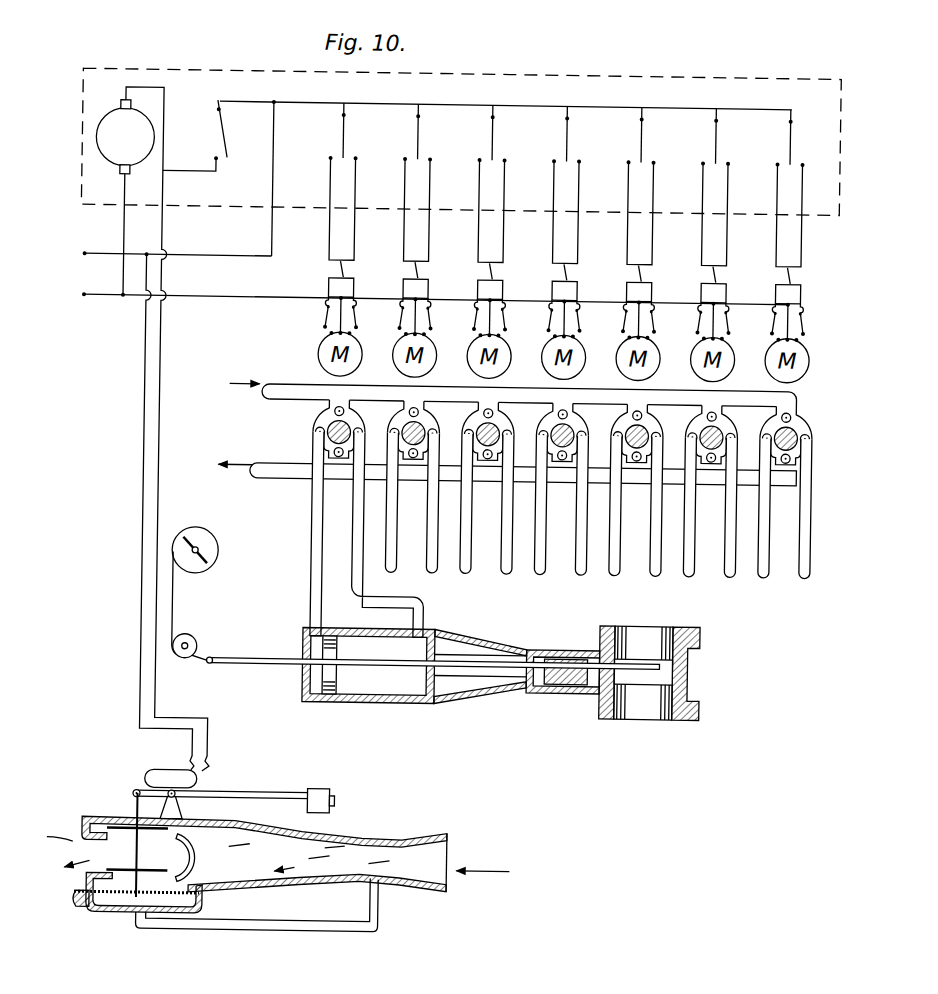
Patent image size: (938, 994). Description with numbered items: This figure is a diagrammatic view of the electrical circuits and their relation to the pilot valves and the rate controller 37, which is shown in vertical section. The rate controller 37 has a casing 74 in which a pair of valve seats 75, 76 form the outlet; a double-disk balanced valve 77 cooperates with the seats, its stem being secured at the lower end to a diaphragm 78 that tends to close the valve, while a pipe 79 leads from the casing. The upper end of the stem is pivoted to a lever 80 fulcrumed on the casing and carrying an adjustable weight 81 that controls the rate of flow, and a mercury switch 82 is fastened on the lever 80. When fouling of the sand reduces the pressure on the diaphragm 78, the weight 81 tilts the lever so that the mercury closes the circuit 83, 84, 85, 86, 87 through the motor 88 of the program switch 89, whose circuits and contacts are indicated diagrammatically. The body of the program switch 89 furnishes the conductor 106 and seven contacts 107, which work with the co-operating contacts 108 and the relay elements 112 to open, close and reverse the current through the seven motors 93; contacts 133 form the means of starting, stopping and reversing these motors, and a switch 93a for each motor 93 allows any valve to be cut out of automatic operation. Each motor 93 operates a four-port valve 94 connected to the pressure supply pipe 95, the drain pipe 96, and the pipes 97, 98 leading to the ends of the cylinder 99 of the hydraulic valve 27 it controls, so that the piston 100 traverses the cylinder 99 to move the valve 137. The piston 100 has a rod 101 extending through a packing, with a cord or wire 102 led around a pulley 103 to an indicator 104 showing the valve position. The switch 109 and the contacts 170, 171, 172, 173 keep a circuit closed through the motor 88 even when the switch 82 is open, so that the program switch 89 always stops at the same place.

The hydraulic valve 27 is at (603, 705).
The rate controller 37 is at (254, 826).
The casing 74 is at (335, 840).
The valve seat 75 is at (121, 907).
The valve seat 76 is at (110, 818).
The double-disk balanced valve 77 is at (150, 843).
The diaphragm 78 is at (165, 911).
The pipe 79 is at (280, 934).
The lever 80 is at (257, 777).
The weight 81 is at (324, 791).
The mercury switch 82 is at (168, 774).
The circuit 83 is at (100, 245).
The circuit 84 is at (142, 494).
The circuit 85 is at (161, 503).
The circuit 86 is at (122, 223).
The circuit 87 is at (102, 305).
The motor 88 is at (101, 121).
The program switch 89 is at (540, 74).
The motor 93 is at (434, 362).
The switch 93a is at (478, 276).
The four-port valve 94 is at (357, 417).
The pressure supply pipe 95 is at (293, 386).
The drain pipe 96 is at (286, 459).
The pipe 97 is at (312, 588).
The pipe 98 is at (371, 598).
The cylinder 99 is at (388, 705).
The piston 100 is at (344, 700).
The rod 101 is at (244, 668).
The cord or wire 102 is at (176, 612).
The pulley 103 is at (200, 645).
The indicator 104 is at (220, 551).
The conductor 106 is at (497, 104).
The contact 107 is at (412, 142).
The co-operating contact 108 is at (407, 170).
The switch 109 is at (219, 147).
The armature 112 is at (403, 233).
The contact 133 is at (428, 322).
The valve 137 is at (568, 660).
The contact 170 is at (241, 259).
The contact 171 is at (268, 199).
The contact 172 is at (217, 104).
The contact 173 is at (186, 175).